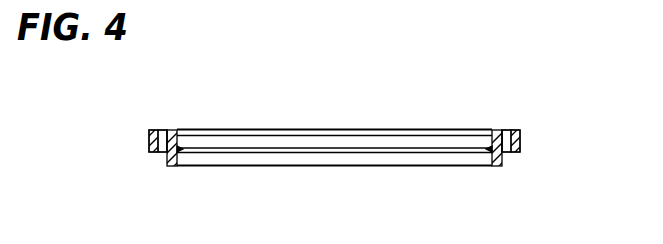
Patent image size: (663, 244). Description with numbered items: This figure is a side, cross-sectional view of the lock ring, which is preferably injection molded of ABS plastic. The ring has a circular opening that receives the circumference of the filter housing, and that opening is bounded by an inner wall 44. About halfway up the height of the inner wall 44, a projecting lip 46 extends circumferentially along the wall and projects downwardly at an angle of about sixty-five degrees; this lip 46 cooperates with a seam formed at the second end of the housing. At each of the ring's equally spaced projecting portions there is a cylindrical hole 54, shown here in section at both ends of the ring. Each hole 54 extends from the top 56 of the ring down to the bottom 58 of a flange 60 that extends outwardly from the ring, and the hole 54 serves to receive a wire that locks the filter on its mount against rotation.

The inner wall 44 is at (273, 158).
The projecting lip 46 is at (458, 153).
The cylindrical hole 54 is at (163, 146).
The top 56 is at (150, 129).
The bottom 58 is at (157, 153).
The flange 60 is at (150, 140).